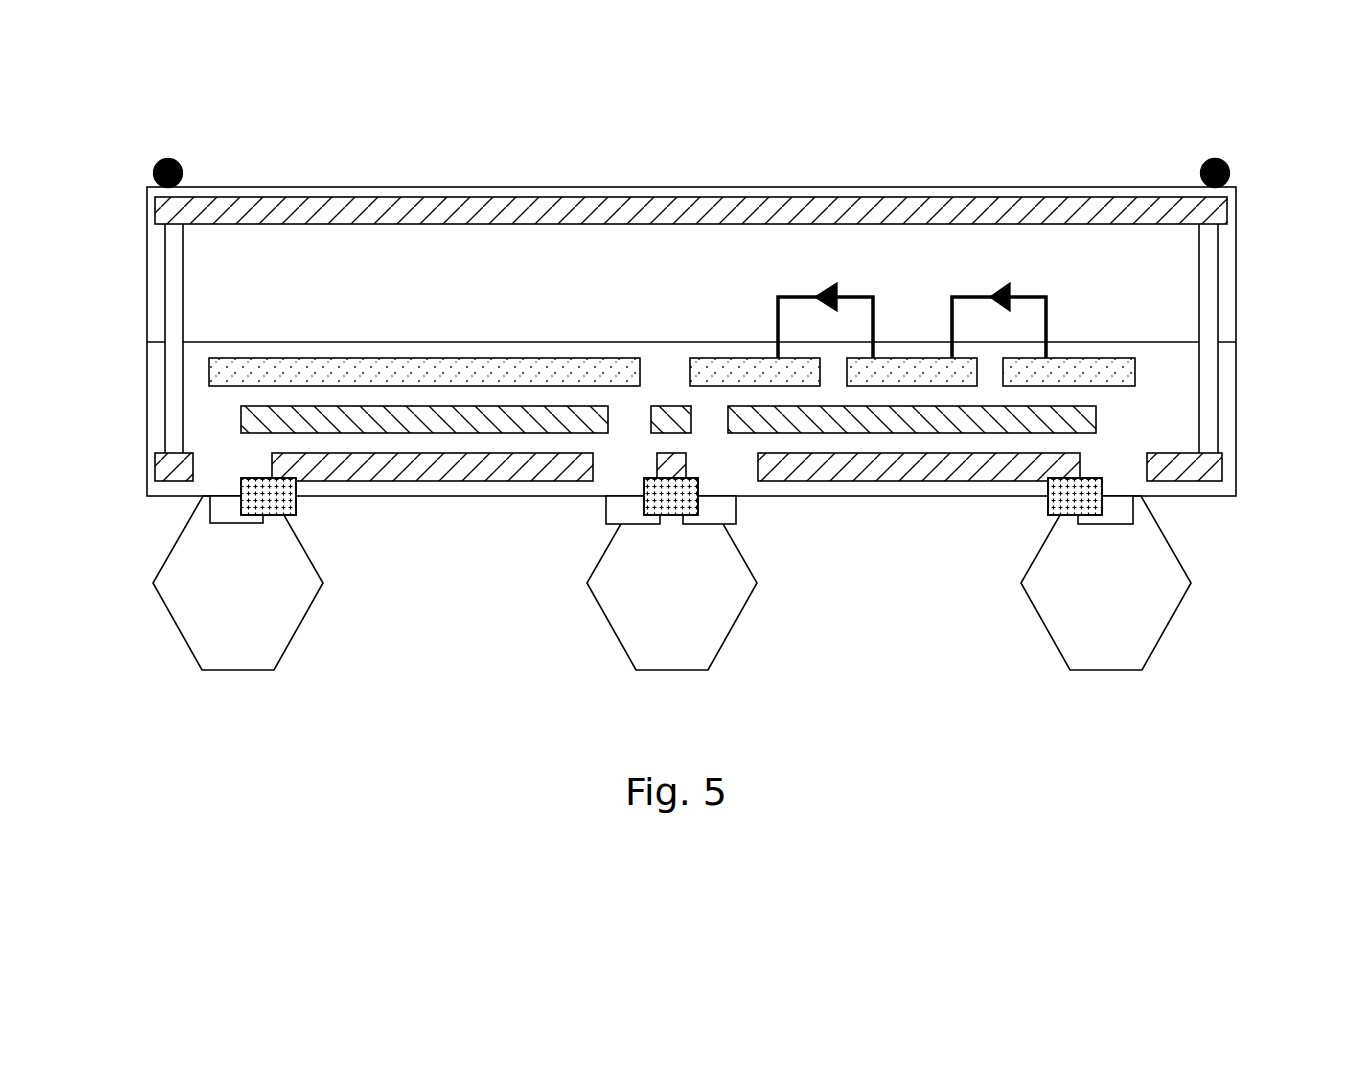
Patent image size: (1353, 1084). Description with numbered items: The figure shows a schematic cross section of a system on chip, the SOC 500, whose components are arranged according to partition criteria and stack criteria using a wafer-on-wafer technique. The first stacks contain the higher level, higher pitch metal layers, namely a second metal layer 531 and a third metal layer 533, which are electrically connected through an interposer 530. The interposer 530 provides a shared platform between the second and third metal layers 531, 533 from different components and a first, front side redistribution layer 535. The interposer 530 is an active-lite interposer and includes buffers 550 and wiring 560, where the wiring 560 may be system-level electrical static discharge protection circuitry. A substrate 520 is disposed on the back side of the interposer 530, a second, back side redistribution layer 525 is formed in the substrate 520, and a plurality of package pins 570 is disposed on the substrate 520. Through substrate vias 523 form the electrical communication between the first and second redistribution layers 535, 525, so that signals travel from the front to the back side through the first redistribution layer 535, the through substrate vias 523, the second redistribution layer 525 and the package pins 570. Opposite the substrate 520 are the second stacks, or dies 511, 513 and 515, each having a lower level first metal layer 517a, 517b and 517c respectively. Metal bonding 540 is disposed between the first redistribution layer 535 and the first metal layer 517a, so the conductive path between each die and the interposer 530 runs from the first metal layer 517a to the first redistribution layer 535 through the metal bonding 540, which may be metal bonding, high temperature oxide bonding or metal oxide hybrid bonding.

The SOC 500 is at (121, 108).
The second stack 511 is at (287, 612).
The second stack 513 is at (718, 613).
The second stack 515 is at (1155, 613).
The first metal layer 517a is at (217, 510).
The first metal layer 517b is at (618, 512).
The first metal layer 517c is at (1125, 510).
The substrate 520 is at (1228, 272).
The through substrate vias 523 is at (1209, 322).
The second redistribution layer 525 is at (1220, 213).
The interposer 530 is at (1228, 412).
The second metal layer 531 is at (228, 373).
The third metal layer 533 is at (245, 420).
The first redistribution layer 535 is at (890, 481).
The metal bonding 540 is at (296, 503).
The buffers 550 is at (1006, 285).
The wiring 560 is at (827, 285).
The package pins 570 is at (1232, 173).